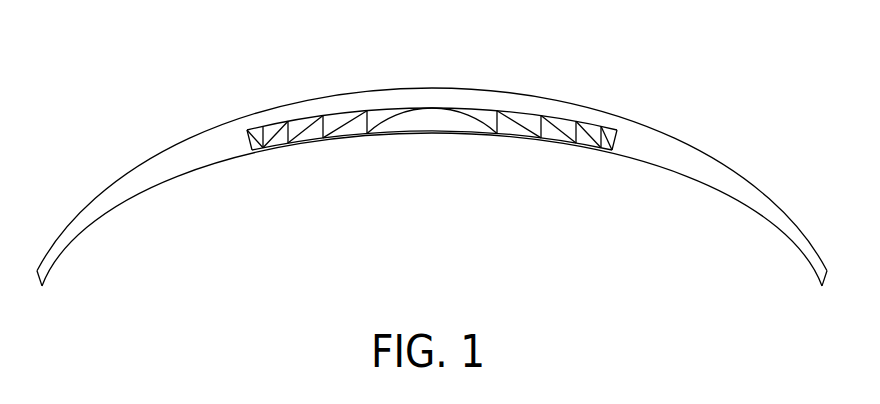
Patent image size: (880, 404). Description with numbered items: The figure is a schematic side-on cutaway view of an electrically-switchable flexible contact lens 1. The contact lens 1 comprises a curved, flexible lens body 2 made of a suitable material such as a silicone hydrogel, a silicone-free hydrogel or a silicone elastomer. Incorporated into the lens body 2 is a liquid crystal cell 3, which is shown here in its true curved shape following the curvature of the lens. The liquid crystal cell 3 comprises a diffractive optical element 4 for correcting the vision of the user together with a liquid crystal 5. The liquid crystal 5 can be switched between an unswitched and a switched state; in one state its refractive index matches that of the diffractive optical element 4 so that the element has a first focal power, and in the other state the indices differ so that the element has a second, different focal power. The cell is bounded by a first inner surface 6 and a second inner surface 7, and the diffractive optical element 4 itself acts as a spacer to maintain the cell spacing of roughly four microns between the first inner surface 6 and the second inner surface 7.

The contact lens 1 is at (258, 99).
The flexible lens body 2 is at (664, 157).
The liquid crystal cell 3 is at (527, 108).
The diffractive optical element 4 is at (407, 120).
The liquid crystal 5 is at (525, 120).
The first inner surface 6 is at (254, 150).
The second inner surface 7 is at (348, 110).